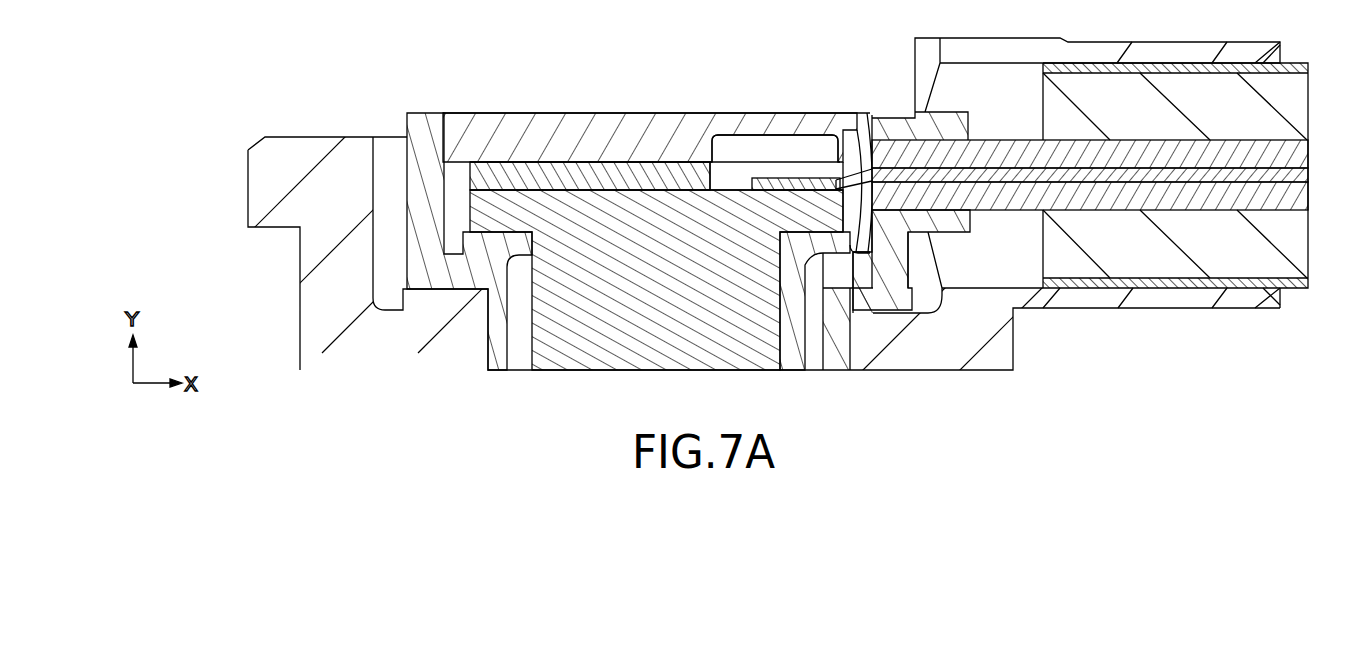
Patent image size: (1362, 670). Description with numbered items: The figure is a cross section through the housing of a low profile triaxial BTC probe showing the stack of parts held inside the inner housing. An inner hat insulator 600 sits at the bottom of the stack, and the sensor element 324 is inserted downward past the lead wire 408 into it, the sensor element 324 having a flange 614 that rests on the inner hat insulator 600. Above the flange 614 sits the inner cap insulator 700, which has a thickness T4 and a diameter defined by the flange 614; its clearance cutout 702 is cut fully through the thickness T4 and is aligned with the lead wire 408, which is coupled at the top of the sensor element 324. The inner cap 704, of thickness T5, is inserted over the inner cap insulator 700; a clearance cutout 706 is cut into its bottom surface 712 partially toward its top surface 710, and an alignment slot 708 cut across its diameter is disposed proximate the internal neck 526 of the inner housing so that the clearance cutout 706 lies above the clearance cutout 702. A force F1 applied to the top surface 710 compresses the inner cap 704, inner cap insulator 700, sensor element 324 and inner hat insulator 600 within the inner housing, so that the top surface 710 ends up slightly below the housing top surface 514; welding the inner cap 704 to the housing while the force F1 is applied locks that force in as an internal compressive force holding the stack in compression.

The sensor element 324 is at (758, 391).
The flange 614 is at (470, 207).
The inner hat insulator 600 is at (548, 322).
The inner cap insulator 700 is at (631, 180).
The top surface 514 is at (557, 112).
The bottom surface 712 is at (661, 166).
The inner cap 704 is at (604, 148).
The top surface 710 is at (683, 113).
The clearance cutout 706 is at (771, 147).
The alignment slot 708 is at (862, 118).
The clearance cutout 702 is at (738, 174).
The lead wire 408 is at (793, 182).
The internal neck 526 is at (947, 221).
The thickness T5 is at (505, 157).
The thickness T4 is at (547, 185).
The force F1 is at (657, 105).